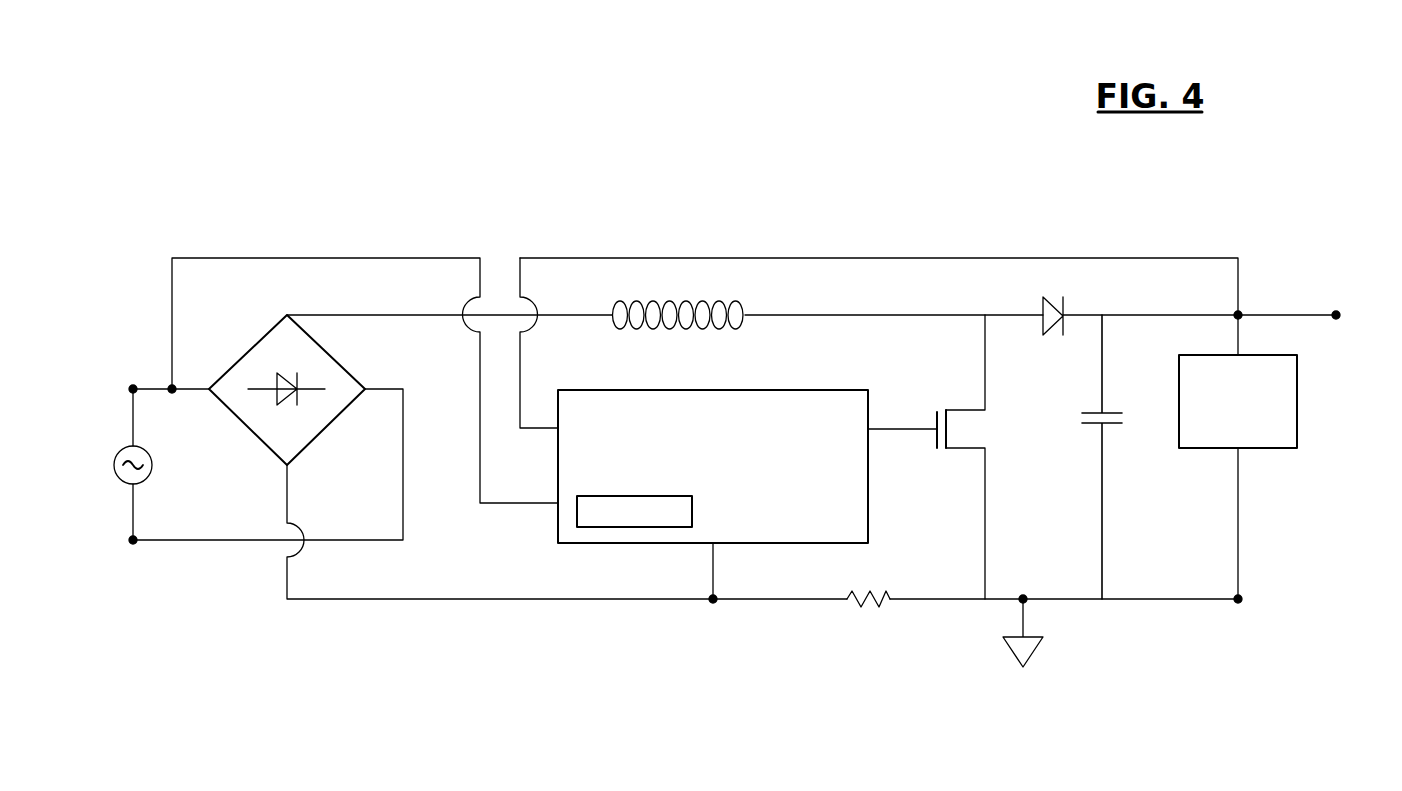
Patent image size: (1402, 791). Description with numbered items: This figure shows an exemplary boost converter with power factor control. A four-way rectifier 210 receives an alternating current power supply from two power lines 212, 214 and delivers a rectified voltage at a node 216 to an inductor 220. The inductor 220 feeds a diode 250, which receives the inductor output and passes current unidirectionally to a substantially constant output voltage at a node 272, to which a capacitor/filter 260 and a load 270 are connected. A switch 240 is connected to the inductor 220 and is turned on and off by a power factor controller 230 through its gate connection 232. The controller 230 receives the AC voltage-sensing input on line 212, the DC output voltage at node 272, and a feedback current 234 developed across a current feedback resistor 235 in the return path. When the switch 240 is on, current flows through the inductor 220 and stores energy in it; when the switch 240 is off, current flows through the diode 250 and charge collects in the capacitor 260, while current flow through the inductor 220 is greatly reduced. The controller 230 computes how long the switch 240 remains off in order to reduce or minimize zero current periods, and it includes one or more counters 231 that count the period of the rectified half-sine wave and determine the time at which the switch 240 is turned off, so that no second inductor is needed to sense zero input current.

The four-way rectifier 210 is at (342, 362).
The power line 212 is at (313, 257).
The power line 214 is at (230, 542).
The node 216 is at (497, 312).
The inductor 220 is at (745, 309).
The power factor controller 230 is at (872, 517).
The counter 231 is at (625, 527).
The gate drive line 232 is at (893, 433).
The feedback current 234 is at (645, 600).
The current feedback resistor 235 is at (884, 605).
The switch 240 is at (965, 430).
The diode 250 is at (1043, 307).
The capacitor/filter 260 is at (1090, 425).
The load 270 is at (1298, 430).
The input node 272 is at (890, 258).